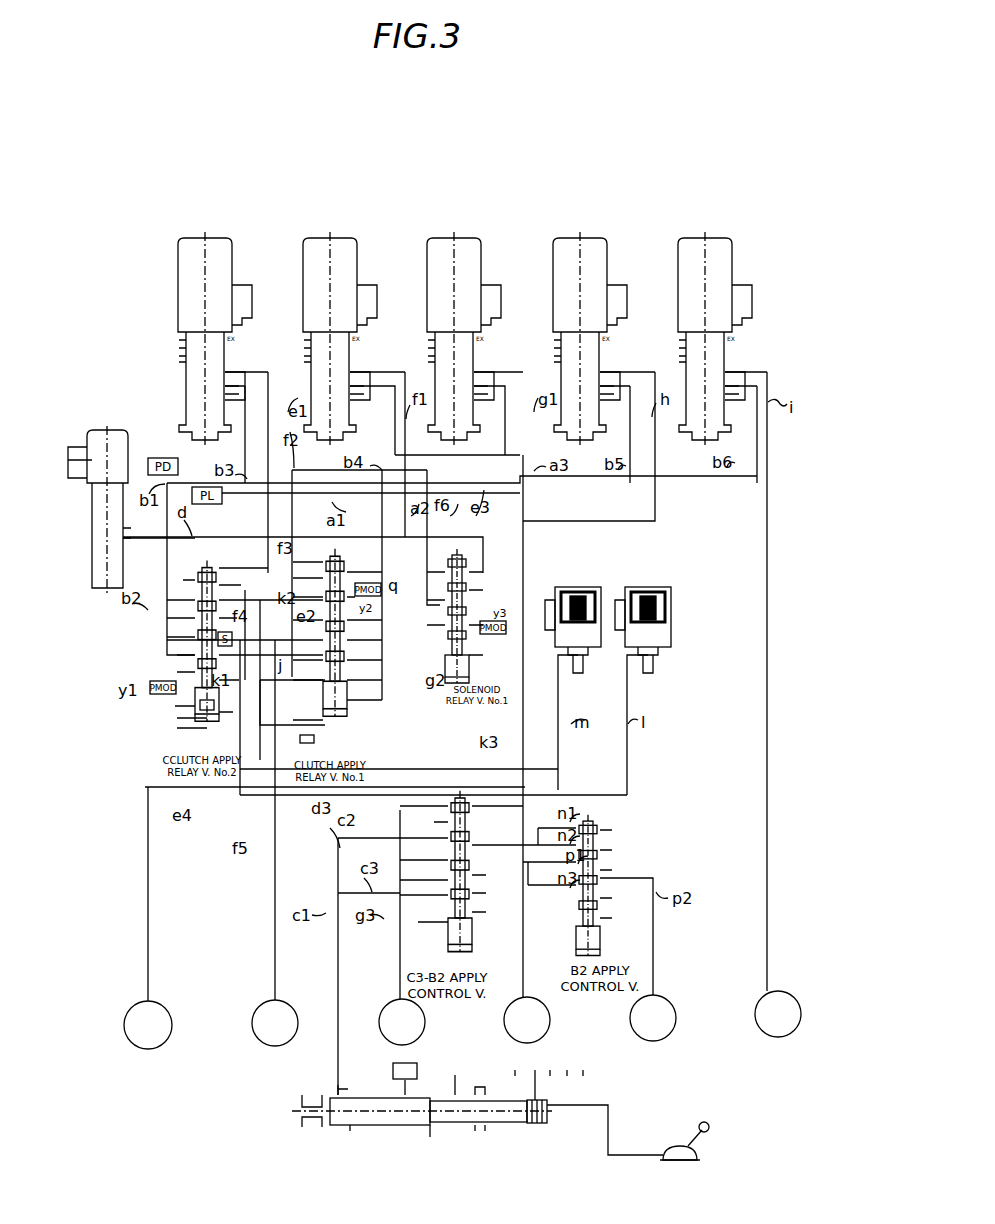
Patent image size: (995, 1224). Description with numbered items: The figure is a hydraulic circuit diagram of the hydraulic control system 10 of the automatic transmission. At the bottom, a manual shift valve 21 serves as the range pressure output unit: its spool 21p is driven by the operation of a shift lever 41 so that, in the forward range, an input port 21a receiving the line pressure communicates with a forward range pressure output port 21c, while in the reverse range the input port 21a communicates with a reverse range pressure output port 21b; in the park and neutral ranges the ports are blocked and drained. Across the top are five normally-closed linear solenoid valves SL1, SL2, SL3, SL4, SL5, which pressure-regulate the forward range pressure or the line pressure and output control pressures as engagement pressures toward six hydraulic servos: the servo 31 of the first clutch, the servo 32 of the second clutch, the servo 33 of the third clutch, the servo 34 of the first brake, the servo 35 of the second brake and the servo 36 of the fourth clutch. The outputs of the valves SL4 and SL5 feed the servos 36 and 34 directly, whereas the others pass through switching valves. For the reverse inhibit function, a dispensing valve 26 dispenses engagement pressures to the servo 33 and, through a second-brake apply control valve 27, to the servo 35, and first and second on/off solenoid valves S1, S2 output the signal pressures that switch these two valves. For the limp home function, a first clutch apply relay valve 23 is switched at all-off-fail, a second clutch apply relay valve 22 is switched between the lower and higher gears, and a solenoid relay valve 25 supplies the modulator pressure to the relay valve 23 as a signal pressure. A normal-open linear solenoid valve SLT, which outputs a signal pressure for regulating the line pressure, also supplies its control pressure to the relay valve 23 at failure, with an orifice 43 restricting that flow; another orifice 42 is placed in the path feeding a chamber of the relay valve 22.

The hydraulic control system 10 is at (456, 165).
The linear solenoid valve SL1 is at (245, 376).
The linear solenoid valve SL2 is at (369, 376).
The linear solenoid valve SL3 is at (494, 376).
The linear solenoid valve SL4 is at (742, 373).
The linear solenoid valve SL5 is at (617, 376).
The linear solenoid valve SLT is at (112, 483).
The first on/off solenoid valve S1 is at (576, 662).
The second on/off solenoid valve S2 is at (646, 665).
The manual shift valve 21 is at (450, 1117).
The input port 21a is at (402, 1086).
The reverse range pressure output port 21b is at (334, 1090).
The forward range pressure output port 21c is at (446, 1086).
The spool 21p is at (450, 1137).
The second clutch apply relay valve 22 is at (173, 750).
The first clutch apply relay valve 23 is at (296, 746).
The solenoid relay valve 25 is at (452, 702).
The dispensing valve 26 is at (481, 942).
The B2 apply control valve 27 is at (643, 818).
The hydraulic servo 31 is at (136, 992).
The hydraulic servo 32 is at (264, 992).
The hydraulic servo 33 is at (391, 992).
The hydraulic servo 34 is at (533, 990).
The hydraulic servo 35 is at (660, 988).
The hydraulic servo 36 is at (768, 984).
The shift lever 41 is at (710, 1127).
The orifice 42 is at (213, 711).
The orifice 43 is at (296, 737).